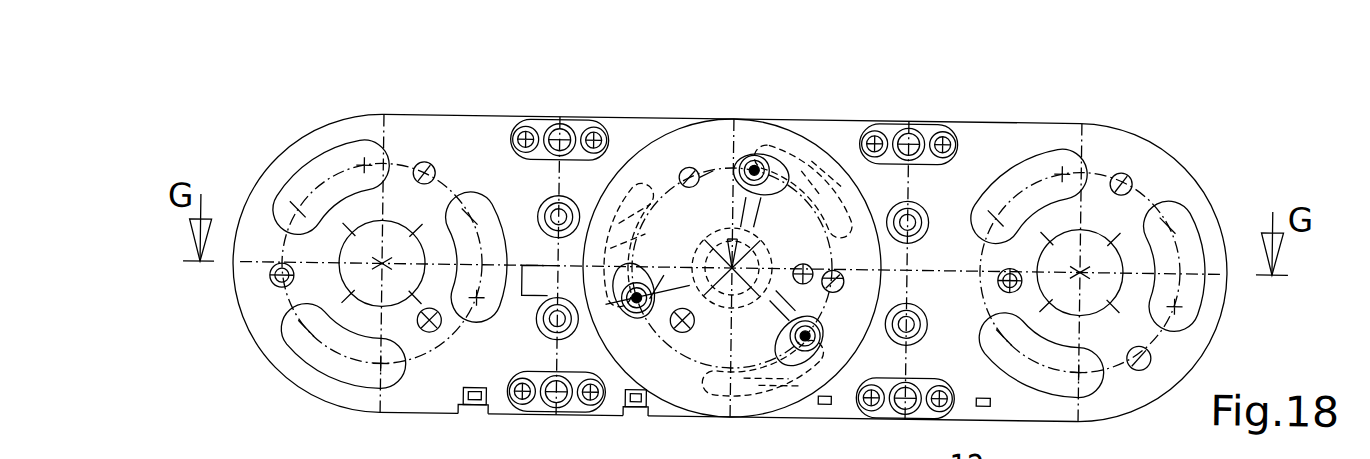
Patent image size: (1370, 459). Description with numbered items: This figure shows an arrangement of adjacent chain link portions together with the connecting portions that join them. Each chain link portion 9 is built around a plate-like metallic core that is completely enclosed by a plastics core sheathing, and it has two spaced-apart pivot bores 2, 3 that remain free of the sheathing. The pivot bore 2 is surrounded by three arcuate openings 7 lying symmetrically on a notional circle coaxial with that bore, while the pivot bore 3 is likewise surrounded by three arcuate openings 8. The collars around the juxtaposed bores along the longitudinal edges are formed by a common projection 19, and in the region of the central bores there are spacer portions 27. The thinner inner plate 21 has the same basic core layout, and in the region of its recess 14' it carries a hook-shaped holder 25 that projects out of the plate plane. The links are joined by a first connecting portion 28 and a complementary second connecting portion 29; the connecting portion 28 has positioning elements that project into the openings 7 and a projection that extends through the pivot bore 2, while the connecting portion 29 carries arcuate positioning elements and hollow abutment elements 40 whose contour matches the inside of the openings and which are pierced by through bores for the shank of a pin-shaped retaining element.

The pivot bore 2 is at (1107, 246).
The pivot bore 3 is at (369, 247).
The arcuate openings 7 is at (1015, 179).
The arcuate openings 8 is at (470, 196).
The chain link portion 9 is at (1104, 119).
The common projection 19 is at (888, 125).
The inner plate 21 is at (510, 121).
The holder 25 is at (468, 410).
The recess 14' is at (573, 431).
The spacer portion 27 is at (549, 207).
The connecting portion 29 is at (697, 150).
The abutment elements 40 is at (747, 157).
The connecting portion 28 is at (847, 452).